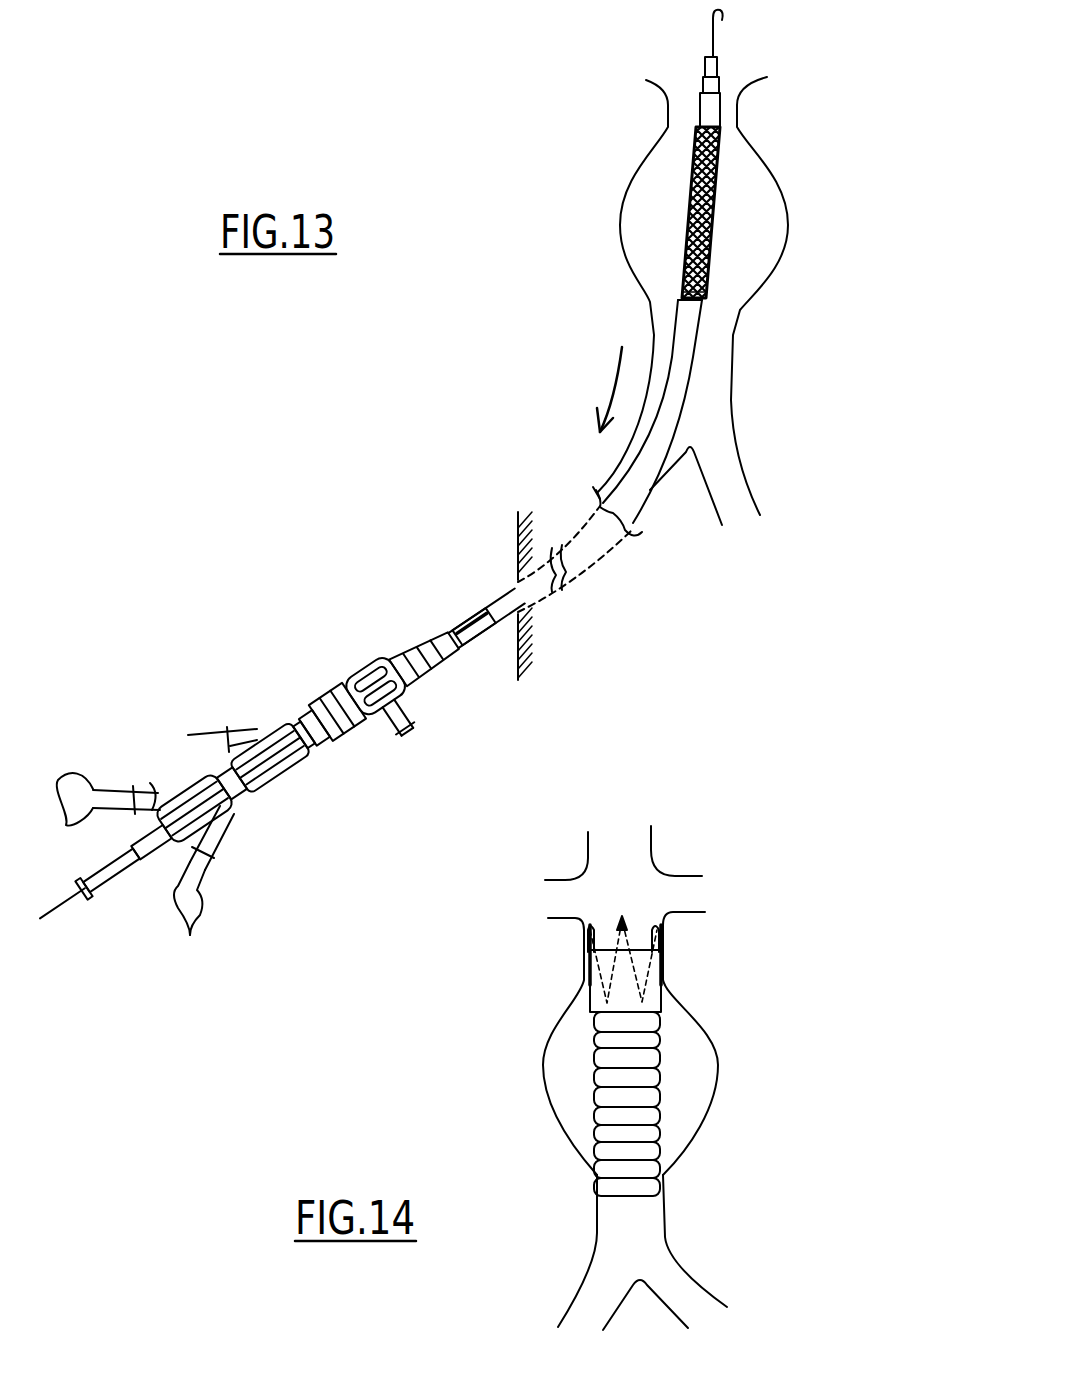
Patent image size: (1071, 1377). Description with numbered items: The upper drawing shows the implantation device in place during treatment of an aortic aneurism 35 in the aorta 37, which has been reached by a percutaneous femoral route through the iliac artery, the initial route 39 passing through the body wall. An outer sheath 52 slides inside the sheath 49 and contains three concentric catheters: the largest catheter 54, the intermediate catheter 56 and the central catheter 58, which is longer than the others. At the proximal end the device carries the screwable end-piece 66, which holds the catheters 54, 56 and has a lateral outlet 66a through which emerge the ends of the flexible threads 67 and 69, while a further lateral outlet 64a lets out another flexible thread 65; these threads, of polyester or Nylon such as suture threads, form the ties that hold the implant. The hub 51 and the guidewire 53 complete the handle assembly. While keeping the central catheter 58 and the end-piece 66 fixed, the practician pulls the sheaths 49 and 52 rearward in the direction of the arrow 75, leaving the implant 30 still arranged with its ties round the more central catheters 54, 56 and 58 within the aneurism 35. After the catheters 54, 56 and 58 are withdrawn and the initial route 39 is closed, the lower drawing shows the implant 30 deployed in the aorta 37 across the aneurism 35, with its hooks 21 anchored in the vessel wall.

In FIG. 14, the hooks 21 is at (583, 920).
In FIG. 13, the implant 30 is at (713, 223).
In FIG. 14, the implant 30 is at (675, 1076).
In FIG. 14, the aortic aneurism 35 is at (518, 990).
In FIG. 14, the aorta 37 is at (667, 1200).
In FIG. 13, the initial route 39 is at (518, 609).
In FIG. 13, the sheath 49 is at (680, 396).
In FIG. 13, the hub 51 is at (333, 698).
In FIG. 13, the outer sheath 52 is at (462, 622).
In FIG. 13, the guidewire 53 is at (50, 903).
In FIG. 13, the catheter 54 is at (720, 110).
In FIG. 13, the catheter 56 is at (702, 86).
In FIG. 13, the central catheter 58 is at (718, 63).
In FIG. 13, the lateral outlet 64a is at (257, 735).
In FIG. 13, the flexible thread 65 is at (198, 738).
In FIG. 13, the end-piece 66 is at (235, 812).
In FIG. 13, the lateral outlet 66a is at (152, 797).
In FIG. 13, the flexible thread 67 is at (93, 792).
In FIG. 13, the flexible thread 69 is at (204, 889).
In FIG. 13, the arrow 75 is at (617, 378).